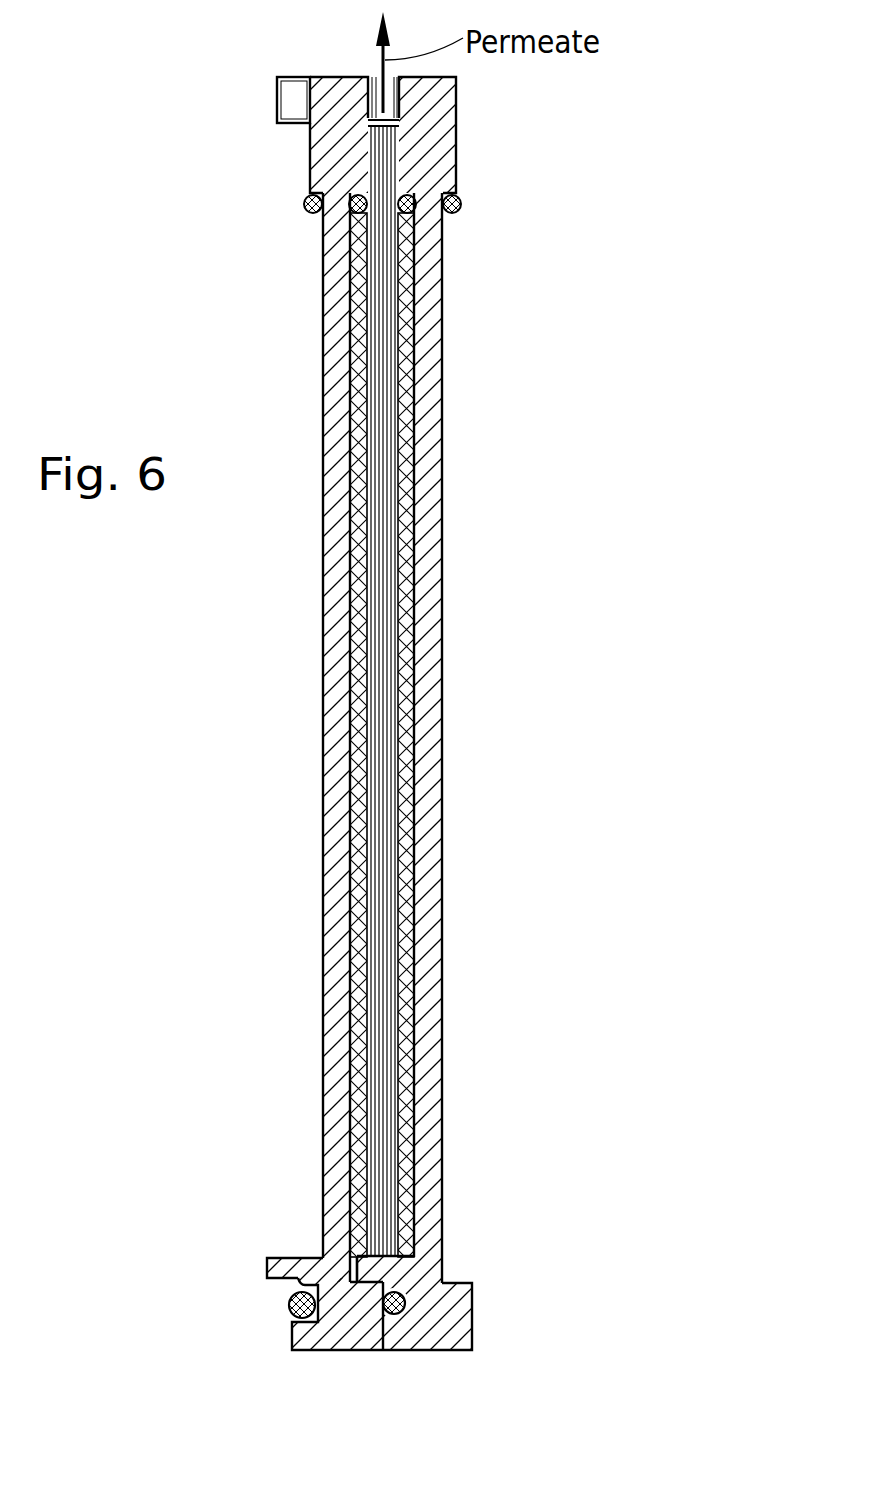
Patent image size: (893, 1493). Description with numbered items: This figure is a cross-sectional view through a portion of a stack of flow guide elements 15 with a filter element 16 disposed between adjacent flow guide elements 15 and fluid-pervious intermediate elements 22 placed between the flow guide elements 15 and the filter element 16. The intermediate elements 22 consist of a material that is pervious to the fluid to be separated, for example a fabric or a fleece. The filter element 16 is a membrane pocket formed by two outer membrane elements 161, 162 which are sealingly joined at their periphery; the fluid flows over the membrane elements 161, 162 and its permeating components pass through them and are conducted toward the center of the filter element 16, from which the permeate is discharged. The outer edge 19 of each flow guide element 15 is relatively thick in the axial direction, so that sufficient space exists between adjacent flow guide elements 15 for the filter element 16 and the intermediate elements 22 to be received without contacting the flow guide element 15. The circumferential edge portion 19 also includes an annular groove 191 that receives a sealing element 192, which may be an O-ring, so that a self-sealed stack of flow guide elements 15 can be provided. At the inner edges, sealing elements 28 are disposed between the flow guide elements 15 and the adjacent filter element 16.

The flow guide element 15 is at (432, 472).
The filter element 16 is at (382, 617).
The outer membrane element 161 is at (357, 1025).
The outer membrane element 162 is at (410, 1020).
The outer edge 19 is at (450, 1300).
The annular groove 191 is at (320, 1280).
The sealing element 192 is at (288, 1306).
The intermediate element 22 is at (415, 537).
The sealing element 28 is at (314, 215).